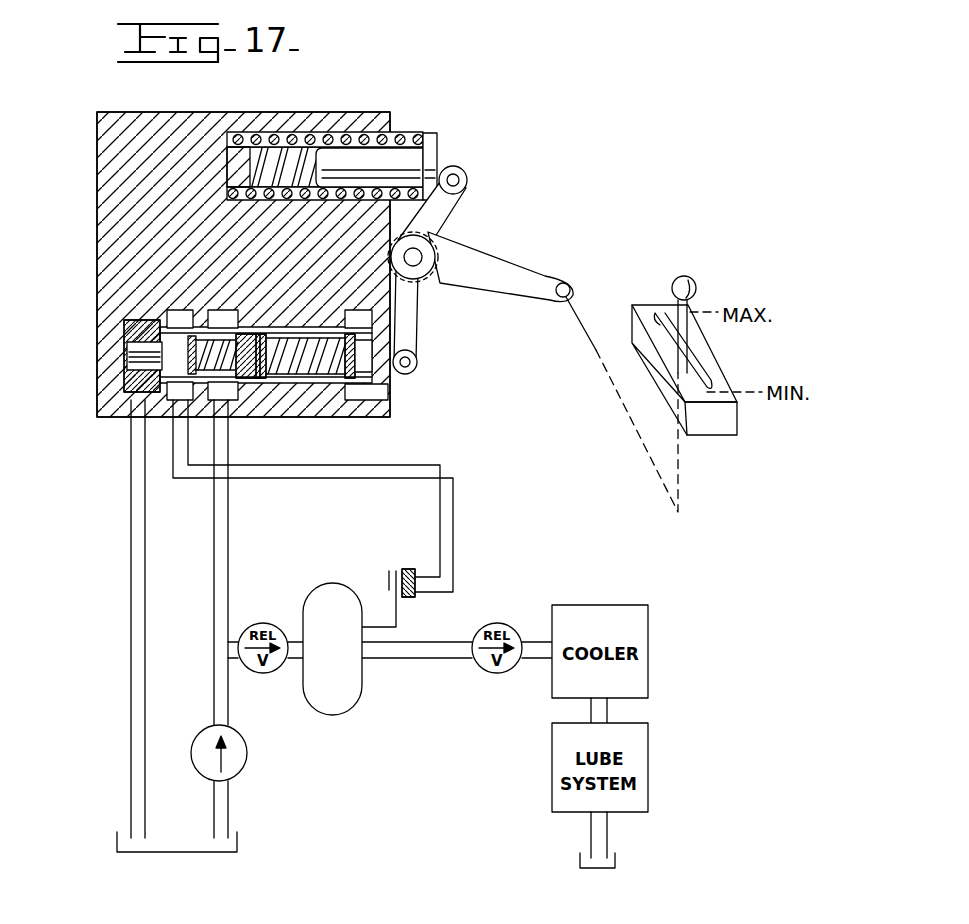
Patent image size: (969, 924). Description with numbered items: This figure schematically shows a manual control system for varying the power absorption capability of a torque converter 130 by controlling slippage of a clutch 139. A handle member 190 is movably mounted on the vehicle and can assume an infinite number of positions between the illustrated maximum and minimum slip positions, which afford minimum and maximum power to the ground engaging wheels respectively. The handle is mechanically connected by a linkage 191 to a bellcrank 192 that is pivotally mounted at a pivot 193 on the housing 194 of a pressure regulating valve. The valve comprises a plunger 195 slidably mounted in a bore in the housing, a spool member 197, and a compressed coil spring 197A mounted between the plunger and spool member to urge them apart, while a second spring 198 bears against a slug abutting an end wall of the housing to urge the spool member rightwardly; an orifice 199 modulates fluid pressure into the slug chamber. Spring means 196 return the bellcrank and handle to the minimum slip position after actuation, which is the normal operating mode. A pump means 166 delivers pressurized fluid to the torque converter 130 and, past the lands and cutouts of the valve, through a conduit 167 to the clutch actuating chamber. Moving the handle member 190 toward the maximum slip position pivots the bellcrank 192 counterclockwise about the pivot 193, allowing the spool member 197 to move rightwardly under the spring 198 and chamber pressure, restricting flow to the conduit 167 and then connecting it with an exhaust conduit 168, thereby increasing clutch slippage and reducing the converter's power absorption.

The housing 194 is at (102, 116).
The spring means 196 is at (408, 132).
The pivot 193 is at (490, 270).
The bellcrank 192 is at (528, 272).
The handle member 190 is at (682, 277).
The linkage 191 is at (630, 425).
The orifice 199 is at (180, 310).
The second spring 198 is at (222, 340).
The spool member 197 is at (260, 380).
The compressed coil spring 197A is at (338, 380).
The plunger 195 is at (289, 364).
The exhaust conduit 168 is at (131, 733).
The conduit 167 is at (453, 540).
The clutch 139 is at (398, 568).
The pump means 166 is at (246, 760).
The torque converter 130 is at (355, 665).